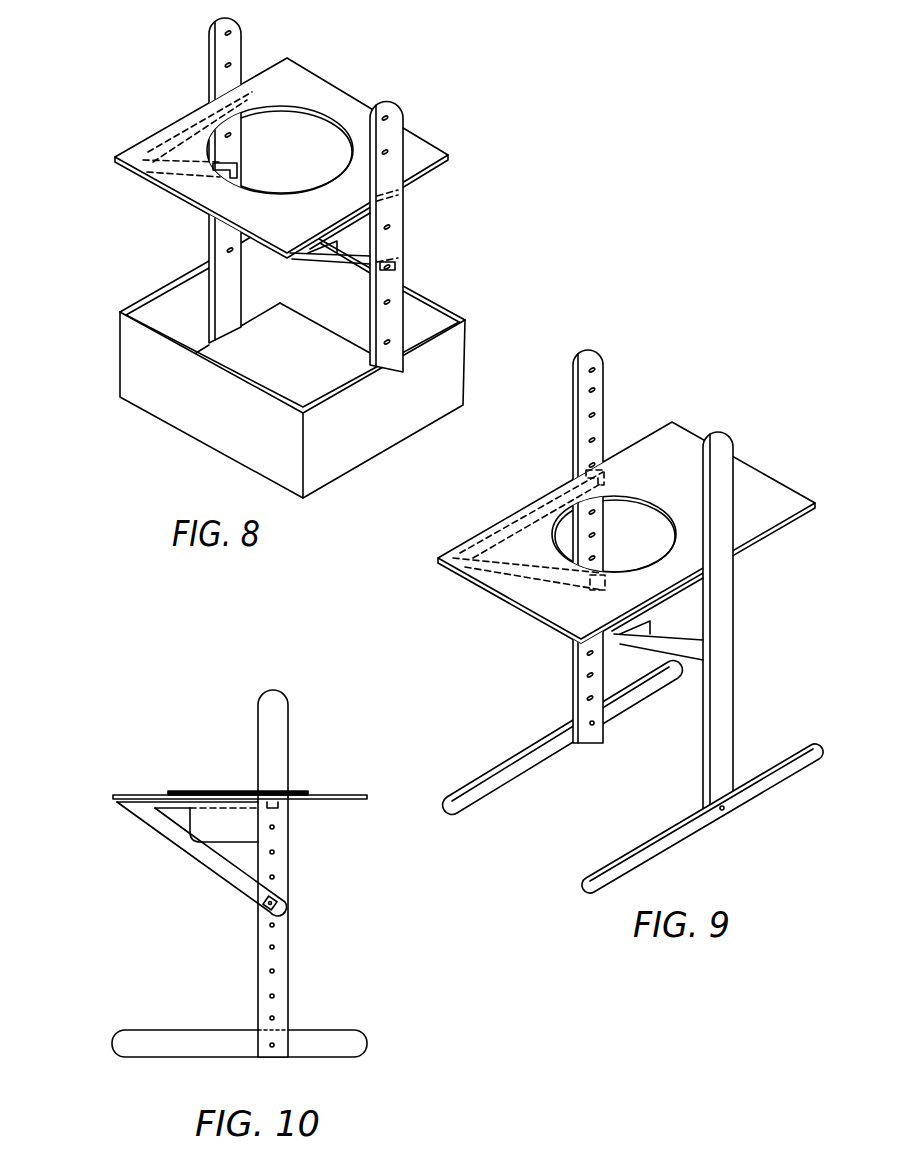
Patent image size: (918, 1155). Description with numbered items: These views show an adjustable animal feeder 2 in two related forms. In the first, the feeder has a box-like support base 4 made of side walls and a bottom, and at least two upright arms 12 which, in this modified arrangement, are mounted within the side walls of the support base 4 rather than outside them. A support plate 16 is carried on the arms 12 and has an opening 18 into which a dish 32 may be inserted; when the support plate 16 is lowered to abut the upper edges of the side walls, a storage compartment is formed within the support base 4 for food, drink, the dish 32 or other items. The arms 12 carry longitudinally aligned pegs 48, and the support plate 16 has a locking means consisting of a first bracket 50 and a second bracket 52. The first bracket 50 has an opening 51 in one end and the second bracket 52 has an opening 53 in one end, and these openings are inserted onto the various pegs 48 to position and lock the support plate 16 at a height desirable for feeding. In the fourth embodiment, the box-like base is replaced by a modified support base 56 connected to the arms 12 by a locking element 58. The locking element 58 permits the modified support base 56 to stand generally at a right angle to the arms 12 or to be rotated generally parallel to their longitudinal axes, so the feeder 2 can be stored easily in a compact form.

In FIG. 8, the adjustable animal feeder 2 is at (308, 195).
In FIG. 9, the adjustable animal feeder 2 is at (630, 605).
In FIG. 10, the adjustable animal feeder 2 is at (249, 894).
In FIG. 8, the support base 4 is at (185, 413).
In FIG. 8, the arms 12 is at (226, 270).
In FIG. 9, the arms 12 is at (584, 426).
In FIG. 10, the arms 12 is at (278, 721).
In FIG. 8, the support plate 16 is at (290, 80).
In FIG. 9, the support plate 16 is at (757, 497).
In FIG. 10, the support plate 16 is at (323, 795).
In FIG. 8, the opening 18 is at (318, 138).
In FIG. 9, the opening 18 is at (653, 549).
In FIG. 10, the dish 32 is at (210, 818).
In FIG. 8, the pegs 48 is at (233, 65).
In FIG. 9, the pegs 48 is at (598, 415).
In FIG. 10, the pegs 48 is at (278, 948).
In FIG. 8, the first bracket 50 is at (183, 133).
In FIG. 9, the first bracket 50 is at (505, 528).
In FIG. 10, the first bracket 50 is at (162, 803).
In FIG. 9, the opening 51 is at (572, 492).
In FIG. 10, the opening 51 is at (276, 810).
In FIG. 8, the second bracket 52 is at (152, 190).
In FIG. 9, the second bracket 52 is at (495, 578).
In FIG. 10, the second bracket 52 is at (220, 867).
In FIG. 9, the opening 53 is at (604, 576).
In FIG. 10, the opening 53 is at (285, 910).
In FIG. 9, the modified support base 56 is at (485, 786).
In FIG. 10, the modified support base 56 is at (337, 1033).
In FIG. 9, the locking element 58 is at (594, 725).
In FIG. 10, the locking element 58 is at (276, 1047).